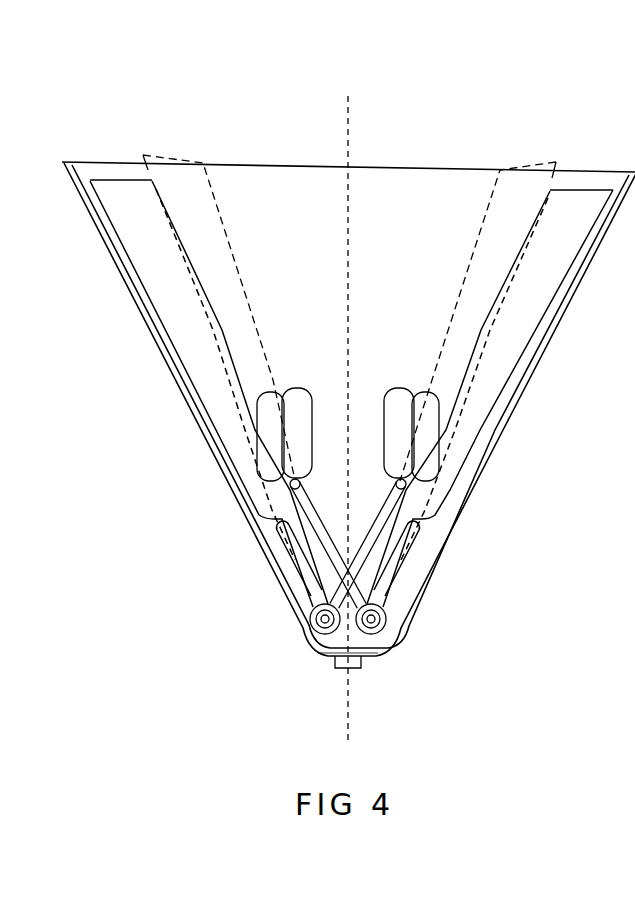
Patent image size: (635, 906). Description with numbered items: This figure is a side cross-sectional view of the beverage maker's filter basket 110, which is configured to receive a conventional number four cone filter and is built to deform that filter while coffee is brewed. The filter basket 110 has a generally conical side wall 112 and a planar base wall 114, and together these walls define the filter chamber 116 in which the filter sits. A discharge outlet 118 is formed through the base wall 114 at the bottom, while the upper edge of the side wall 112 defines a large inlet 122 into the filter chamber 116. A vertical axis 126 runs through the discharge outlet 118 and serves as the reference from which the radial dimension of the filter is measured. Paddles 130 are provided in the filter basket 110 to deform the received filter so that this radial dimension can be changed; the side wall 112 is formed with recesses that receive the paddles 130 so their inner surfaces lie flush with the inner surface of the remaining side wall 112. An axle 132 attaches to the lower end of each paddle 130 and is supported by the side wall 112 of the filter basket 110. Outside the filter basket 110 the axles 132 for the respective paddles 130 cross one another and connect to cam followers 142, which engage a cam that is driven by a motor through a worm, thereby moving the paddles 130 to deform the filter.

The filter basket 110 is at (456, 116).
The side wall 112 is at (545, 365).
The base wall 114 is at (373, 661).
The filter chamber 116 is at (325, 273).
The discharge outlet 118 is at (346, 670).
The inlet 122 is at (310, 183).
The vertical axis 126 is at (356, 132).
The paddle 130 is at (106, 200).
The axle 132 is at (395, 500).
The cam follower 142 is at (287, 392).